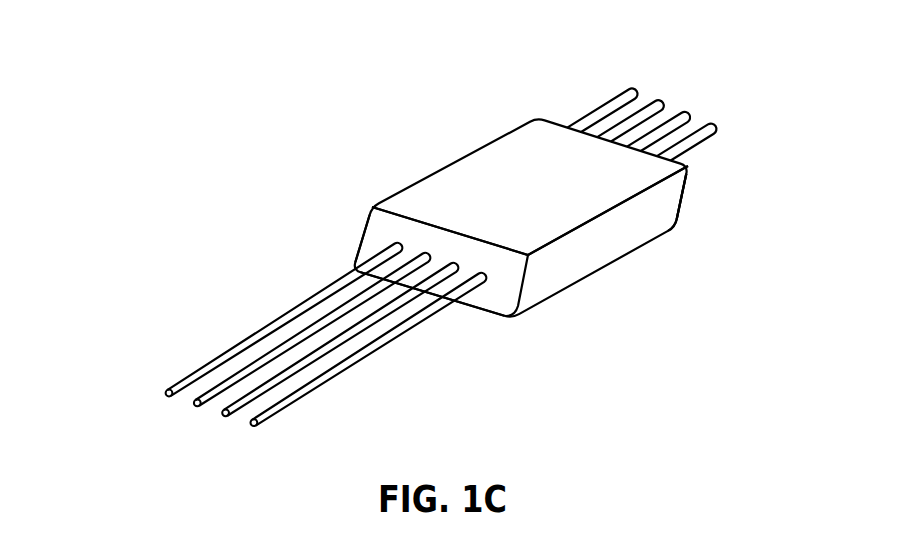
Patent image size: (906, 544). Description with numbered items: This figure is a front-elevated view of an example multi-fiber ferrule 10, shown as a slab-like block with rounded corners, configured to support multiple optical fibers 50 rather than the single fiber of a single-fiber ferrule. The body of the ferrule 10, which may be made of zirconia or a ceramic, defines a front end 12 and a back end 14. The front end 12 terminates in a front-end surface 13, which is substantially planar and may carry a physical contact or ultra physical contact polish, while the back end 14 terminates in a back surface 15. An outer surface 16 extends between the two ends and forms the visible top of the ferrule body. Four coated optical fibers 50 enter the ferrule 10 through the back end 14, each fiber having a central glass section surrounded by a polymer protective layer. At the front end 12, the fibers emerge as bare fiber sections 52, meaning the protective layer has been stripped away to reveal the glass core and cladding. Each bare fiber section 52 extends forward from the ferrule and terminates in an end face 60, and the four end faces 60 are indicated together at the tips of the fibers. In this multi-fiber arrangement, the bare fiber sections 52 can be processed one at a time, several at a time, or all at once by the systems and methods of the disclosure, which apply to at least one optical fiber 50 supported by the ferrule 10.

The ferrule 10 is at (420, 141).
The front end 12 is at (364, 249).
The front-end surface 13 is at (503, 306).
The back end 14 is at (711, 183).
The back surface 15 is at (688, 198).
The outer surface 16 is at (502, 173).
The optical fiber 50 is at (594, 97).
The bare fiber section 52 is at (222, 327).
The end face 60 is at (250, 425).